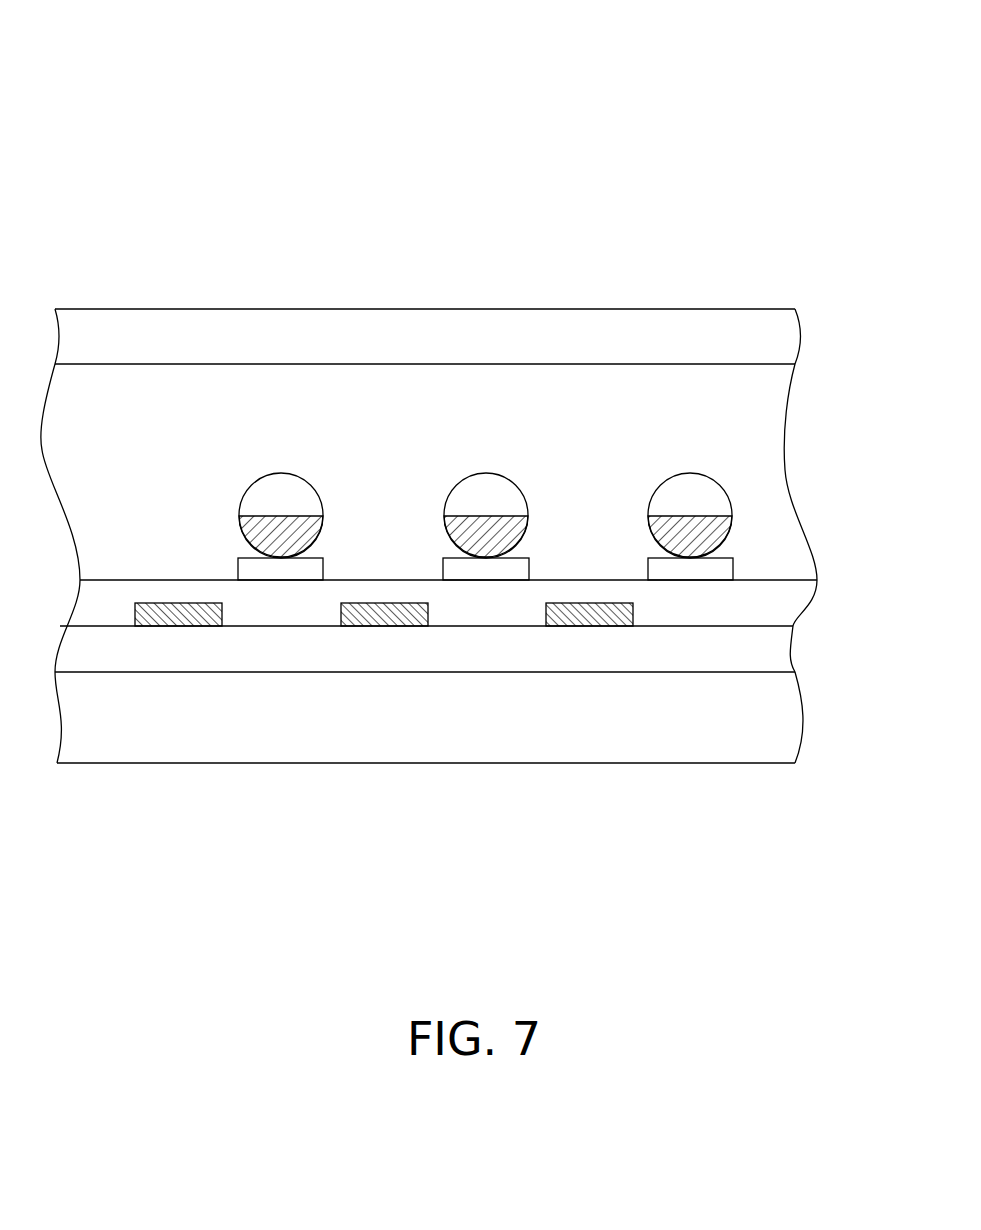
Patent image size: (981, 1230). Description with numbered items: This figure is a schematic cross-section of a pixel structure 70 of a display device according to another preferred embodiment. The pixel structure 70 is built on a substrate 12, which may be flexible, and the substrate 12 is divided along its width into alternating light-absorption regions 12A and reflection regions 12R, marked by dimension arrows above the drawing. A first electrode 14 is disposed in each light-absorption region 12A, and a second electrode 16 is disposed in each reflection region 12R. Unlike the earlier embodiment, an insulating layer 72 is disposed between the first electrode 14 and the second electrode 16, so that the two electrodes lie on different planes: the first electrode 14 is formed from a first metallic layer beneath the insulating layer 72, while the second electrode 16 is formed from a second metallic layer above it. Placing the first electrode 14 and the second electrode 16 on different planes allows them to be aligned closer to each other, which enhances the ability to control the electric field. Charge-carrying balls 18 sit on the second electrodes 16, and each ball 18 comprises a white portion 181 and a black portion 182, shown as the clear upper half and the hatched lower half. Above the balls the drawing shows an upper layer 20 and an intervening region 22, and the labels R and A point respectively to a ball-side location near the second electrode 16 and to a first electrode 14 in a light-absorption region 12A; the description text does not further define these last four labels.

The pixel structure 70 is at (768, 117).
The substrate 12 is at (779, 749).
The light-absorption region 12A is at (134, 284).
The reflection region 12R is at (238, 284).
The first electrode 14 is at (178, 626).
The second electrode 16 is at (288, 570).
The charge-carrying ball 18 is at (514, 465).
The white portion 181 is at (287, 474).
The black portion 182 is at (321, 531).
The upper substrate / lid 20 is at (754, 350).
The encapsulant 22 is at (783, 500).
The insulating layer 72 is at (798, 603).
The reflow region R is at (242, 553).
The area A is at (150, 600).